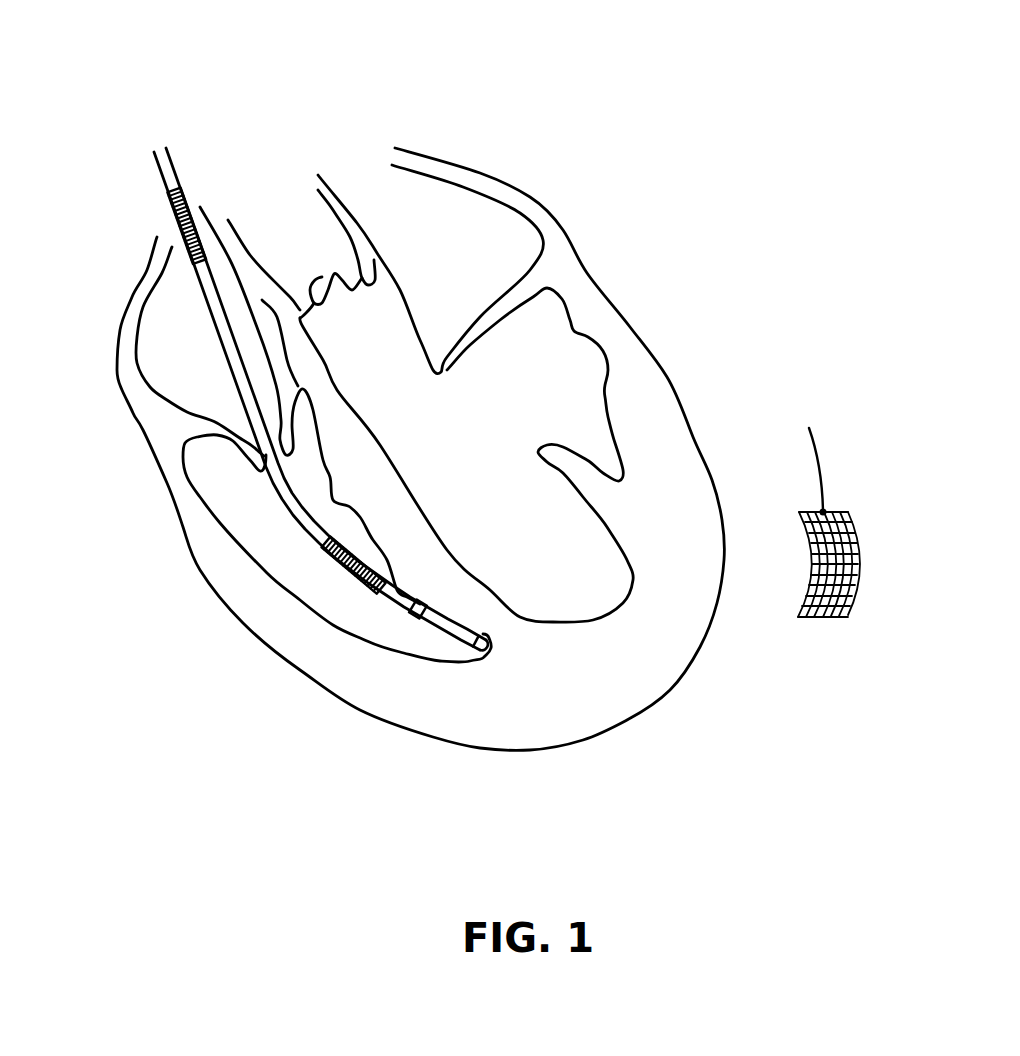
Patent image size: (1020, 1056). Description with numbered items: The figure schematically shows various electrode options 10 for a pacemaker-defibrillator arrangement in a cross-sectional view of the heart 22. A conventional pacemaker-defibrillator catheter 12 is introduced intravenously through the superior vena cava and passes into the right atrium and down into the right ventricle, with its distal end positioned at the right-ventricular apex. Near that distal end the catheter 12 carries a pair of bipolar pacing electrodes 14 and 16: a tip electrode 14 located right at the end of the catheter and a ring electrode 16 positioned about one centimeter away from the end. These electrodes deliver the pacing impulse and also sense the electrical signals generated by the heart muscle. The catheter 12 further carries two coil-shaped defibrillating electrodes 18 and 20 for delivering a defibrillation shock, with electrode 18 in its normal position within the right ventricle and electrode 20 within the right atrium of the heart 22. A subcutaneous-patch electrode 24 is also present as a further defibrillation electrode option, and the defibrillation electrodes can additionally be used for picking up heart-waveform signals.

The electrode options 10 is at (578, 76).
The pacemaker-defibrillator catheter 12 is at (170, 165).
The pacing electrode 14 is at (478, 640).
The pacing electrode 16 is at (423, 613).
The defibrillating electrode 18 is at (330, 560).
The defibrillating electrode 20 is at (174, 211).
The heart 22 is at (667, 378).
The subcutaneous-patch electrode 24 is at (846, 512).